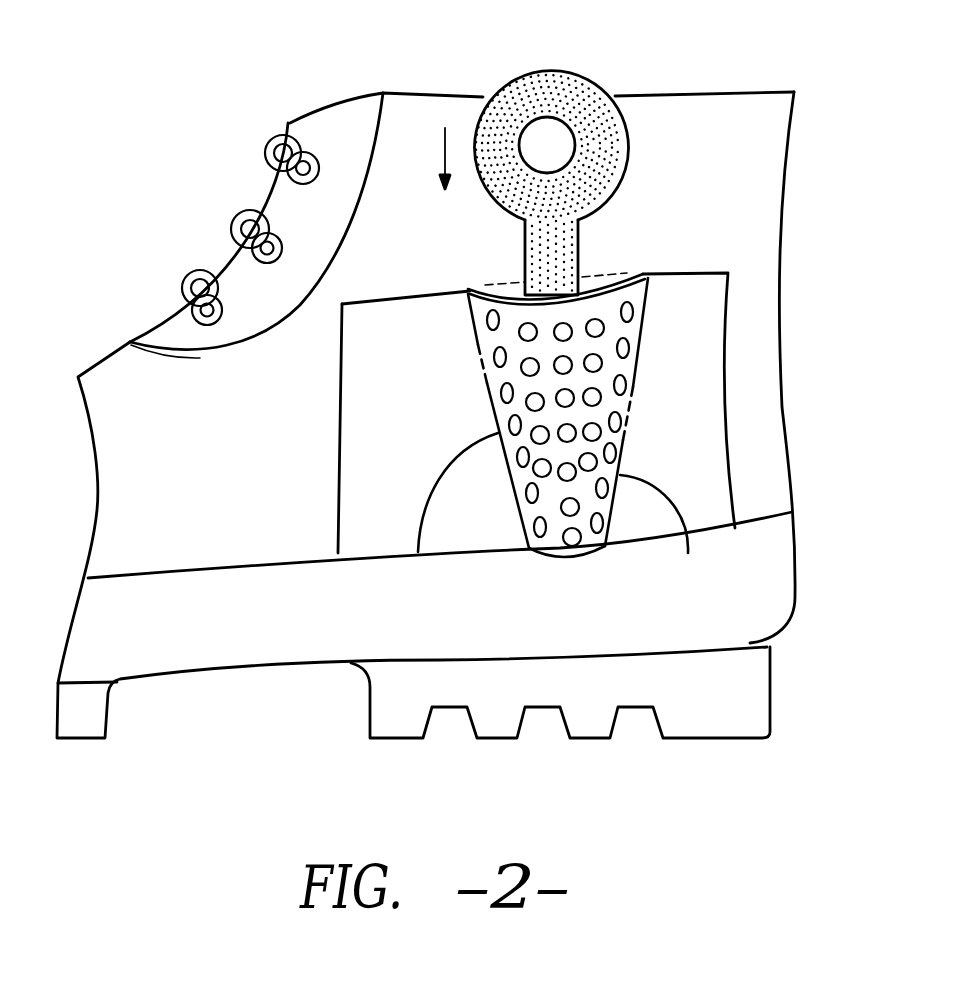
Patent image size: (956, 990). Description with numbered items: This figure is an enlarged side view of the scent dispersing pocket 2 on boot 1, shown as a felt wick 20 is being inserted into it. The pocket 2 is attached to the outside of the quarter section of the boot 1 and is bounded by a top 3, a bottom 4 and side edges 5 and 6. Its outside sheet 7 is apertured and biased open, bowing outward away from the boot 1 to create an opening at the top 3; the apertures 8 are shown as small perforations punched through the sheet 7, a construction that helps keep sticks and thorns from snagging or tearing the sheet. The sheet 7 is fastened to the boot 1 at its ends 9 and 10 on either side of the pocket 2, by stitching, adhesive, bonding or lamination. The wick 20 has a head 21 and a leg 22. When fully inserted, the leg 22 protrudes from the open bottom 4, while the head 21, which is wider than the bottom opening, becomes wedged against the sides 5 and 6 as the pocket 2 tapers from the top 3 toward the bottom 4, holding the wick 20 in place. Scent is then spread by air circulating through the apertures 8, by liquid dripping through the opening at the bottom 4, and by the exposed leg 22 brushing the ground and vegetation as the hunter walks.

The boot 1 is at (764, 469).
The pocket 2 is at (542, 429).
The top 3 is at (598, 285).
The bottom 4 is at (550, 554).
The side edge 5 is at (418, 552).
The side edge 6 is at (688, 553).
The outside sheet 7 is at (500, 338).
The apertures 8 is at (629, 387).
The end 9 is at (363, 442).
The end 10 is at (695, 400).
The wick 20 is at (545, 161).
The head 21 is at (568, 85).
The leg 22 is at (525, 268).